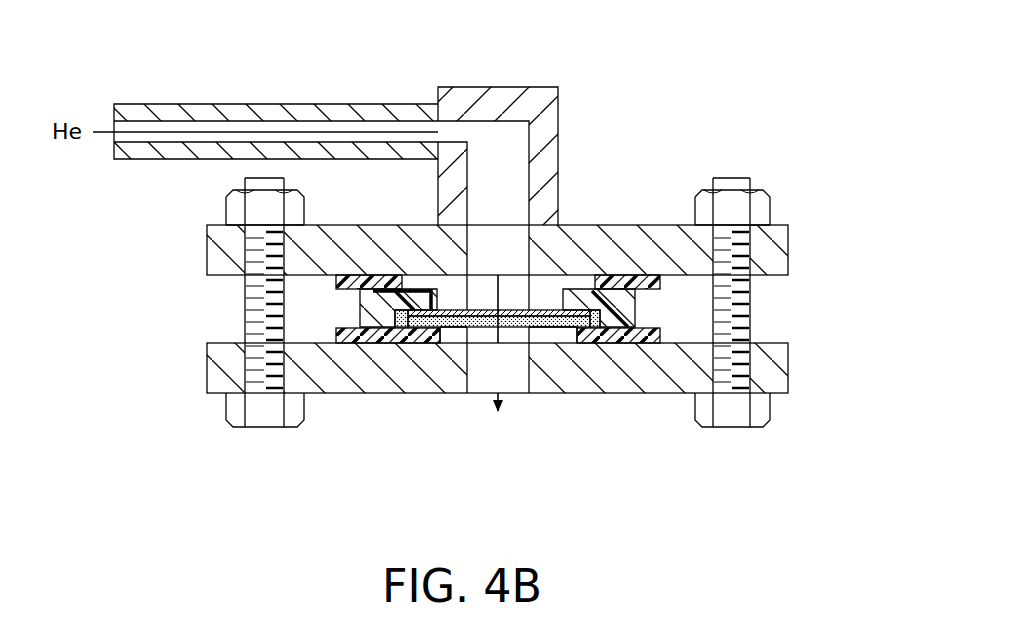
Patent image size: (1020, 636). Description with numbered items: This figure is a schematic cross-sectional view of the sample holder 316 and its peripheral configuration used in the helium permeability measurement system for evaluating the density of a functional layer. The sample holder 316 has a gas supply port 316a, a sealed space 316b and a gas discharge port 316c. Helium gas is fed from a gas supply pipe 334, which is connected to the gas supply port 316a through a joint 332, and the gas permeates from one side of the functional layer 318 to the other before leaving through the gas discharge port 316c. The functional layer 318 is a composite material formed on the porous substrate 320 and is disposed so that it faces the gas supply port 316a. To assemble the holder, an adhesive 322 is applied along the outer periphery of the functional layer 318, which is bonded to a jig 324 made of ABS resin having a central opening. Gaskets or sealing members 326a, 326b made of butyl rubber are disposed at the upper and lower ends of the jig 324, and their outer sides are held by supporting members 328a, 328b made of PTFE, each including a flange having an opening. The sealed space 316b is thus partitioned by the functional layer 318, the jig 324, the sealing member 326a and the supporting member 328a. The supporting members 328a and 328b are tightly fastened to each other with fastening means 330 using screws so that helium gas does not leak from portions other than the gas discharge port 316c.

The sample holder 316 is at (712, 88).
The gas supply port 316a is at (535, 308).
The sealed space 316b is at (443, 328).
The gas discharge port 316c is at (466, 382).
The functional layer 318 is at (598, 313).
The porous substrate 320 is at (555, 328).
The adhesive 322 is at (583, 345).
The jig 324 is at (622, 307).
The sealing member 326a is at (660, 282).
The sealing member 326b is at (660, 334).
The supporting member 328a is at (773, 245).
The supporting member 328b is at (773, 367).
The fastening means 330 is at (730, 428).
The joint 332 is at (486, 96).
The gas supply pipe 334 is at (300, 112).